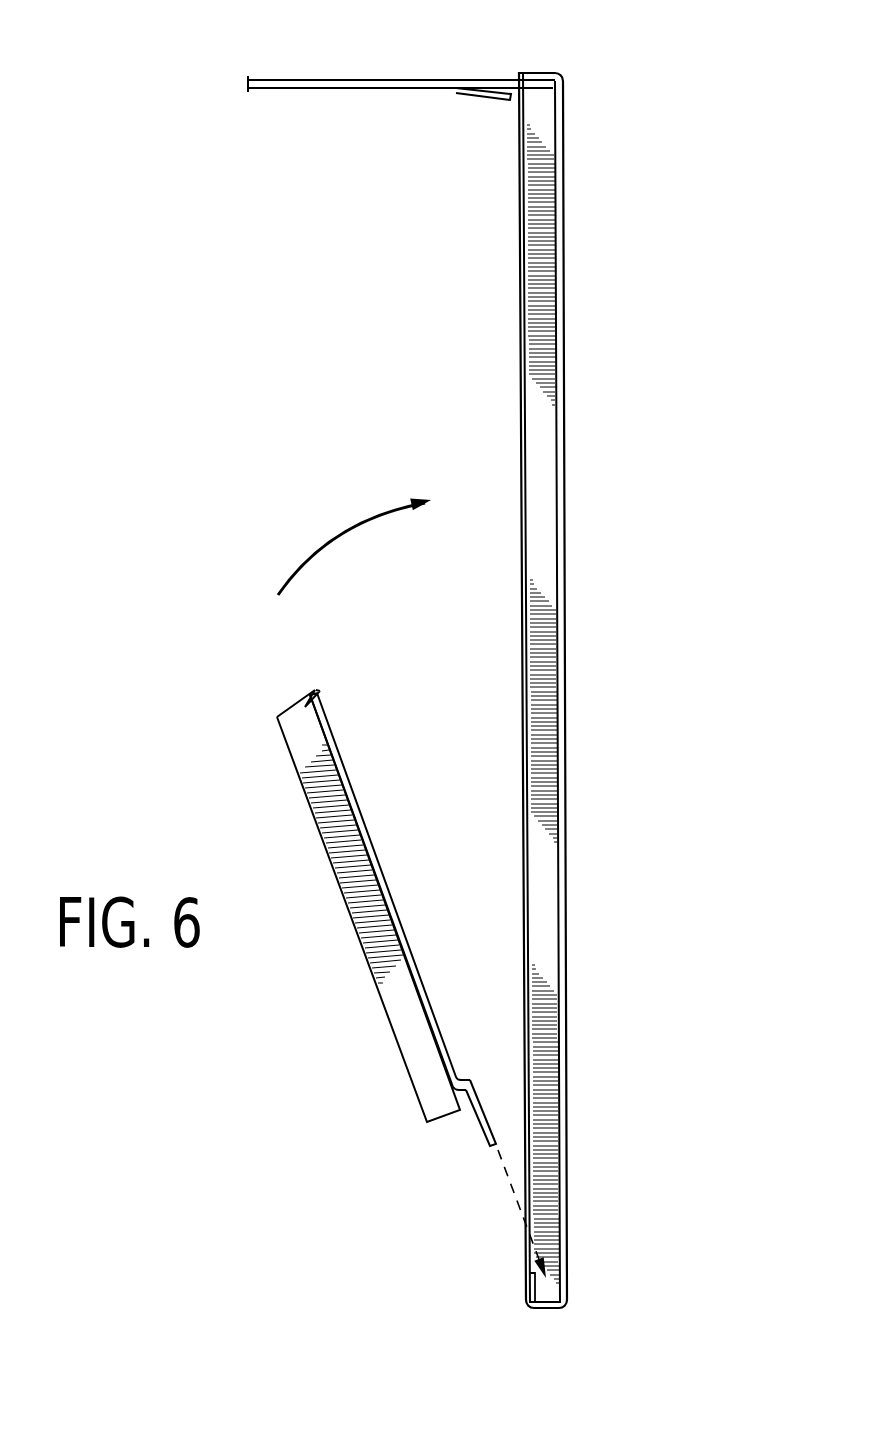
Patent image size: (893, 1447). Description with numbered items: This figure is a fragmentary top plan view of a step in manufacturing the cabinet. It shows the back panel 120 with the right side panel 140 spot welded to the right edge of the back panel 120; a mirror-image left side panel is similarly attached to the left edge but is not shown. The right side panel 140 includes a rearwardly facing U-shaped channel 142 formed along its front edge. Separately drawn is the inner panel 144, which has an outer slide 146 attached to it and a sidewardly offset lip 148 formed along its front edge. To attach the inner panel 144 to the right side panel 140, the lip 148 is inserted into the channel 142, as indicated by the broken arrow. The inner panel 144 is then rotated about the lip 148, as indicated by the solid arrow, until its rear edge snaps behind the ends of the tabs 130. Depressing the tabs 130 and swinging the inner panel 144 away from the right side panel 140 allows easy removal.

The back panel 120 is at (337, 78).
The tabs 130 is at (487, 97).
The right side panel 140 is at (543, 482).
The U-shaped channel 142 is at (527, 1303).
The inner panel 144 is at (388, 903).
The outer slide 146 is at (395, 990).
The sidewardly offset lip 148 is at (483, 1120).